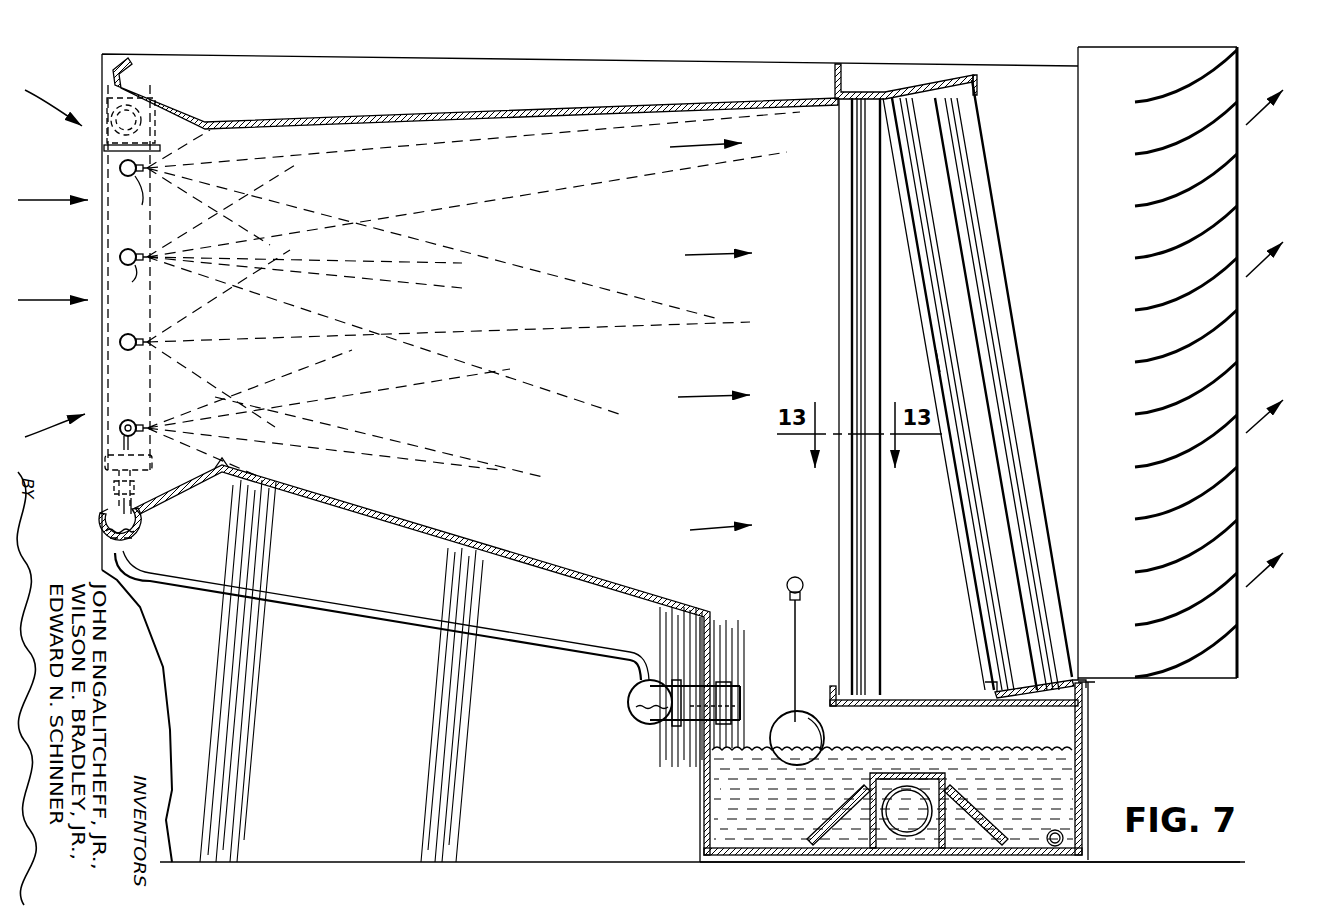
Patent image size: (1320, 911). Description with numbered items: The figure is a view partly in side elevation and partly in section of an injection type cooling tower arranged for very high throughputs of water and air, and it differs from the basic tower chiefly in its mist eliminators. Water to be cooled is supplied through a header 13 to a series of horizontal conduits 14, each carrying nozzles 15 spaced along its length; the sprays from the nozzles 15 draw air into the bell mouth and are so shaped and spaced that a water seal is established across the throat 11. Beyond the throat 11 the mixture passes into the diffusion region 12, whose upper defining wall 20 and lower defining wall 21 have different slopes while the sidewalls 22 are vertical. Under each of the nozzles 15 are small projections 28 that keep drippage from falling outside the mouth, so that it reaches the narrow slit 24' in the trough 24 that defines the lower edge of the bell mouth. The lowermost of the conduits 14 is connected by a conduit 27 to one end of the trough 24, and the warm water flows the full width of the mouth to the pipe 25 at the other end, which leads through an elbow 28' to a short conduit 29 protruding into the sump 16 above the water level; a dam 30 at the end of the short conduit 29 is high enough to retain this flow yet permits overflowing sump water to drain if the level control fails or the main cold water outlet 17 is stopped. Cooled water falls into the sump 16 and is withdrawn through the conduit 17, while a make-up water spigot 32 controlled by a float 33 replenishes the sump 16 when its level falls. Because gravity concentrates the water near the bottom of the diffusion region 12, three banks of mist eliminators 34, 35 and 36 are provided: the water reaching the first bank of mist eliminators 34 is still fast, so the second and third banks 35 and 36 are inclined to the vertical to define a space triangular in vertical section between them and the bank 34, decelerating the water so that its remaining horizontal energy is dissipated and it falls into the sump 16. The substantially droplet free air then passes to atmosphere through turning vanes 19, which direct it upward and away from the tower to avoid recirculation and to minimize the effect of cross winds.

The throat 11 is at (215, 138).
The diffusion region 12 is at (518, 318).
The header 13 is at (108, 232).
The horizontal conduits 14 is at (121, 166).
The nozzles 15 is at (140, 338).
The sump 16 is at (1077, 775).
The conduit 17 is at (897, 824).
The turning vanes 19 is at (1212, 368).
The upper defining wall 20 is at (572, 108).
The lower defining wall 21 is at (388, 527).
The sidewalls 22 is at (558, 540).
The trough 24 is at (145, 523).
The slit 24' is at (82, 520).
The pipe 25 is at (232, 592).
The conduit 27 is at (114, 492).
The projections 28 is at (115, 313).
The elbow 28' is at (624, 700).
The short conduit 29 is at (678, 720).
The dam 30 is at (726, 696).
The make-up water spigot 32 is at (795, 576).
The float 33 is at (818, 741).
The first bank of mist eliminators 34 is at (839, 307).
The second bank of mist eliminators 35 is at (942, 364).
The third bank of mist eliminators 36 is at (988, 222).